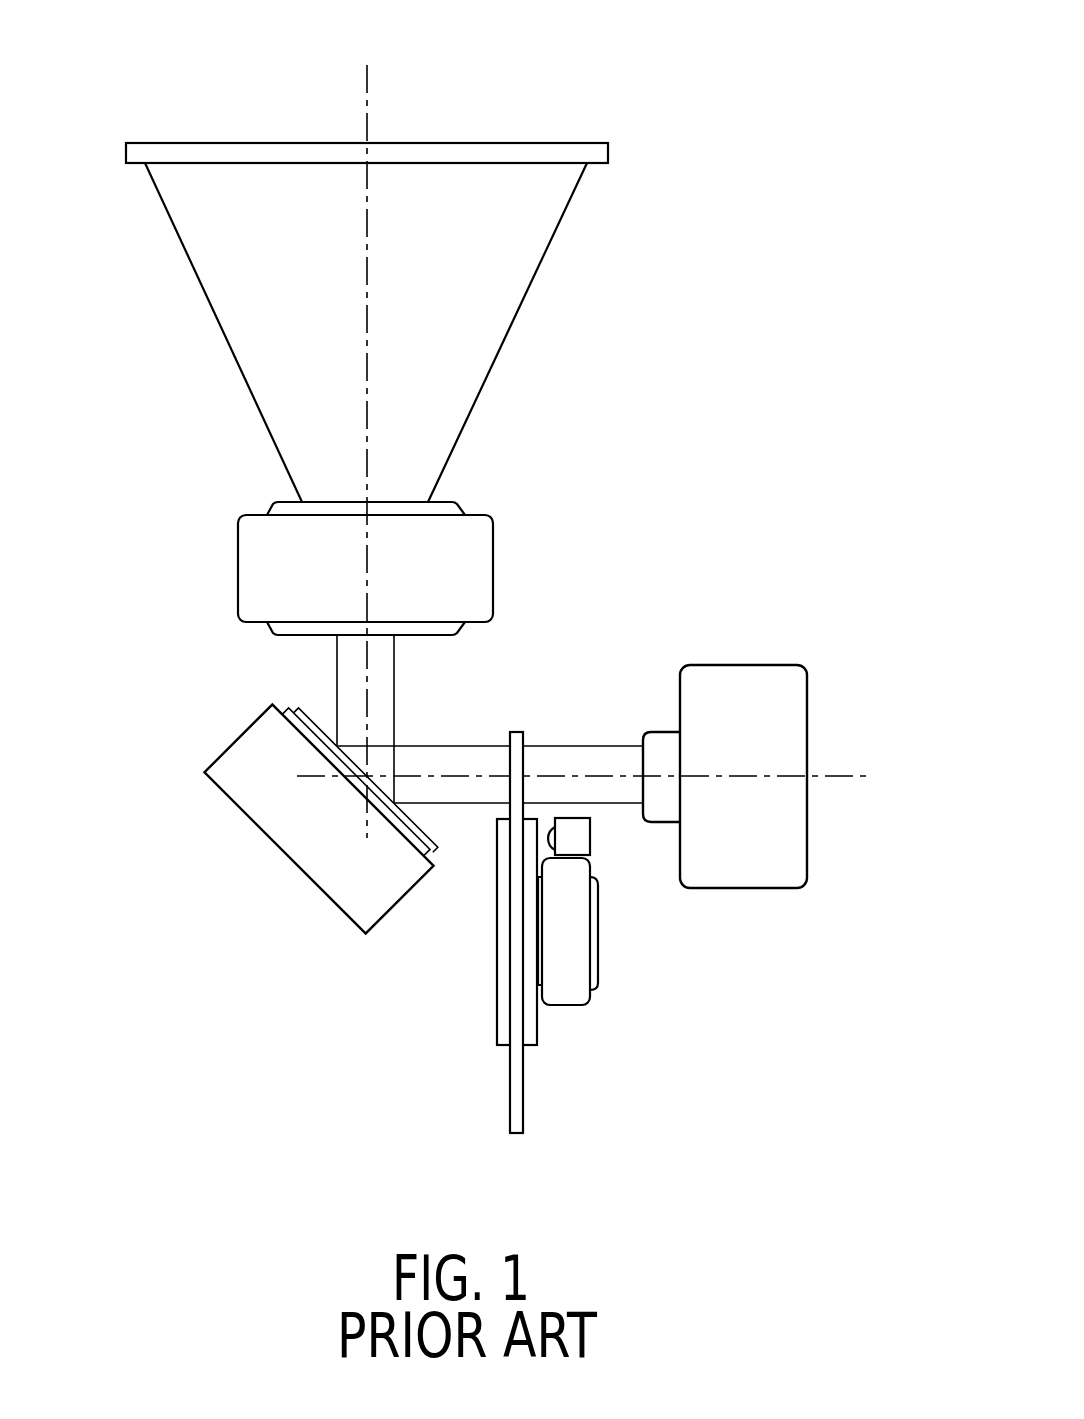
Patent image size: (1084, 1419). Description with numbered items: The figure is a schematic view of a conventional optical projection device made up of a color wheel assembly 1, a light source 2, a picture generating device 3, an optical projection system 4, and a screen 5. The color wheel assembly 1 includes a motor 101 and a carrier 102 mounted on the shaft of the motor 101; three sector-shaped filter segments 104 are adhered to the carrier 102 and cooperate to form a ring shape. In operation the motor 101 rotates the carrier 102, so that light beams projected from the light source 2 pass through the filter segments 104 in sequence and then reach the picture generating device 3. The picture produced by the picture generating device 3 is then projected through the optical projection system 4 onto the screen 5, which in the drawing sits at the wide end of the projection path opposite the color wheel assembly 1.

The color wheel assembly 1 is at (596, 991).
The motor 101 is at (575, 940).
The carrier 102 is at (505, 968).
The filter segments 104 is at (515, 1098).
The light source 2 is at (750, 912).
The picture generating device 3 is at (302, 905).
The optical projection system 4 is at (518, 533).
The screen 5 is at (553, 118).